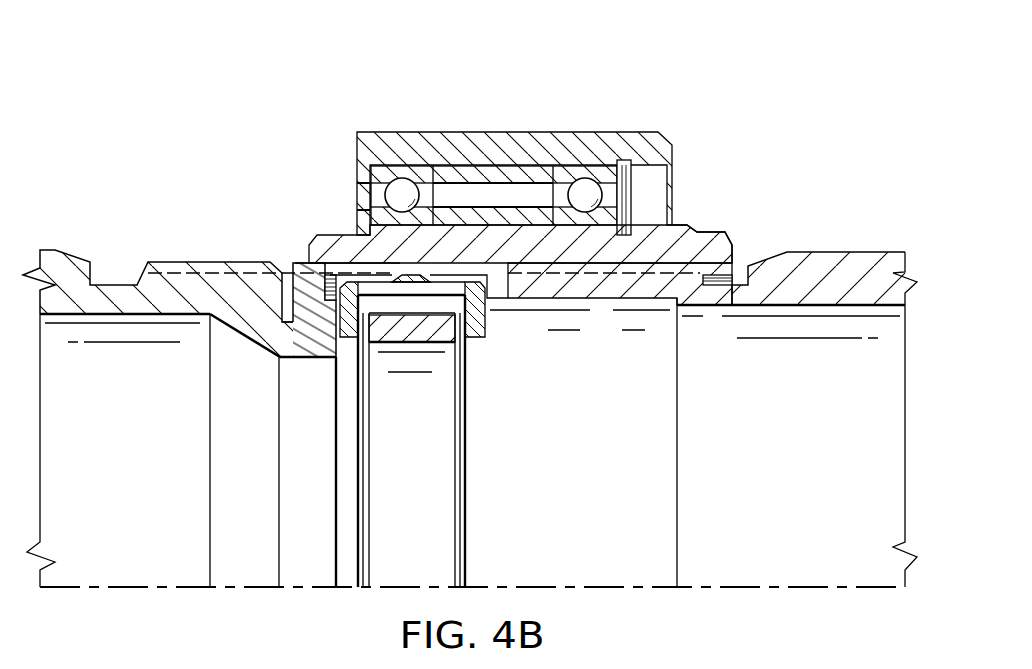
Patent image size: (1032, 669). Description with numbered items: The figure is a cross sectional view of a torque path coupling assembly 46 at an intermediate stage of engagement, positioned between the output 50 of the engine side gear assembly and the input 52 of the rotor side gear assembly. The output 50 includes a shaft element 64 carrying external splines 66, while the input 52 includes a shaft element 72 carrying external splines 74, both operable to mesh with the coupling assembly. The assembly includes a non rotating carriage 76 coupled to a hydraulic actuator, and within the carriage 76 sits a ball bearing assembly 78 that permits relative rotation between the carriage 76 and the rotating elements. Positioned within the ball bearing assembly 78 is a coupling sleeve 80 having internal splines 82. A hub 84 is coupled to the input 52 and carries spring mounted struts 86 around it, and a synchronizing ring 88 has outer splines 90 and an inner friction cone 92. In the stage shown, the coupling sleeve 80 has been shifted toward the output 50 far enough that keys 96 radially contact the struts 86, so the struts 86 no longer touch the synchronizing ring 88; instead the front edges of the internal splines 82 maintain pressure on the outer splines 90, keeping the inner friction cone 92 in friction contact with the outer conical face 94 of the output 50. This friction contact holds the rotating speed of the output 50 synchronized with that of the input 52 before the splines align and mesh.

The torque path coupling assembly 46 is at (514, 147).
The output 50 is at (112, 466).
The input 52 is at (779, 466).
The shaft element 64 is at (68, 272).
The external splines 66 is at (187, 262).
The shaft element 72 is at (818, 258).
The external splines 74 is at (613, 268).
The non rotating carriage 76 is at (500, 140).
The ball bearing assembly 78 is at (386, 170).
The coupling sleeve 80 is at (683, 236).
The internal splines 82 is at (712, 286).
The hub 84 is at (399, 466).
The struts 86 is at (478, 326).
The synchronizing ring 88 is at (302, 307).
The outer splines 90 is at (303, 263).
The inner friction cone 92 is at (312, 350).
The outer conical face 94 is at (285, 345).
The keys 96 is at (390, 263).